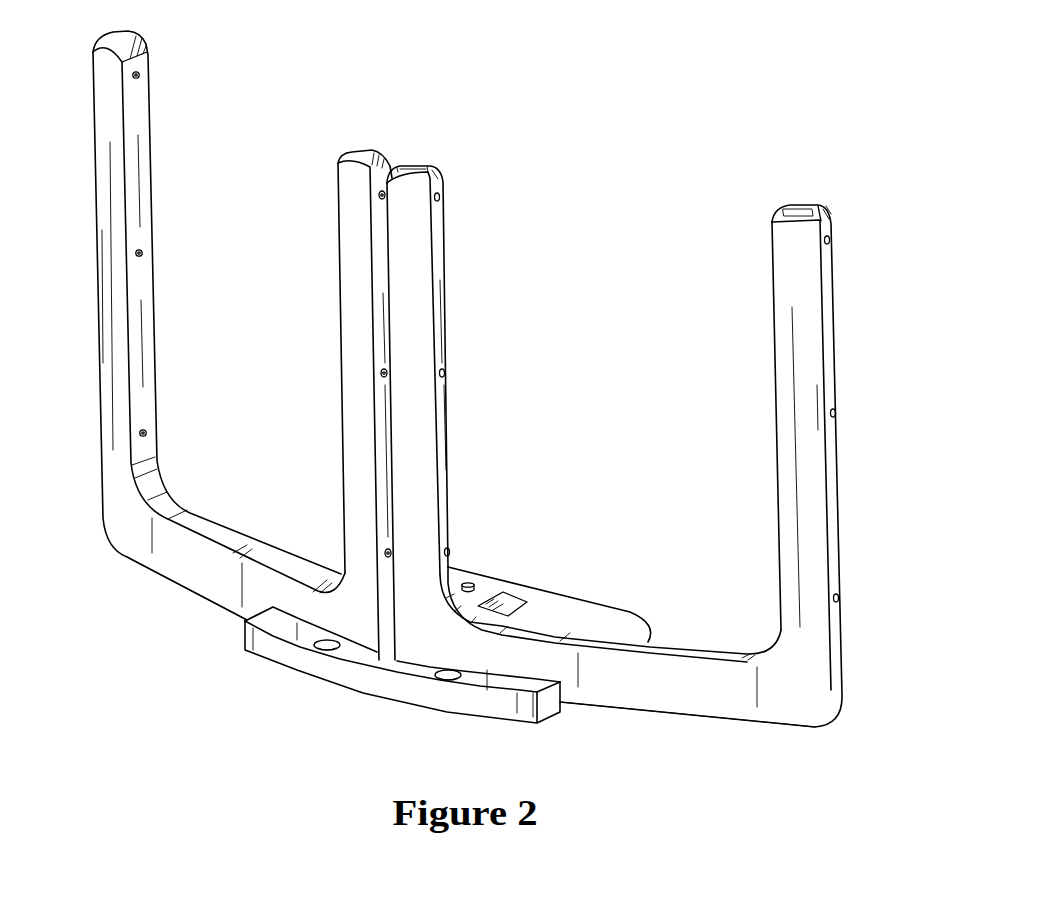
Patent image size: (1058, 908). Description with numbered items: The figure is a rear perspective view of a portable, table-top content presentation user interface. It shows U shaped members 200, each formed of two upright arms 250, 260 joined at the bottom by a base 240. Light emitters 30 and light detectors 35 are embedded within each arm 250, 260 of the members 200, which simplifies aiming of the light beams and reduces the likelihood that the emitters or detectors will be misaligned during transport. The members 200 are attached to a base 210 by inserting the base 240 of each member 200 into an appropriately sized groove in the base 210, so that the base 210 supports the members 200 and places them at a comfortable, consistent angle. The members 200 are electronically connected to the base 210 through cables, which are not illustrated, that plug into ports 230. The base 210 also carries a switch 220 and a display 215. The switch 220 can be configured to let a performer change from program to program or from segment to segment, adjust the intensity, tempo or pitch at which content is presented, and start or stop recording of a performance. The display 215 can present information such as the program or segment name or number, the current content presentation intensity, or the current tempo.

The U shaped member 200 is at (500, 408).
The light emitter 30 is at (148, 75).
The light detector 35 is at (442, 190).
The base 210 is at (535, 627).
The display 215 is at (507, 597).
The switch 220 is at (470, 586).
The port 230 is at (320, 645).
The base of member 240 is at (203, 572).
The arm 250 is at (433, 270).
The arm 260 is at (113, 173).